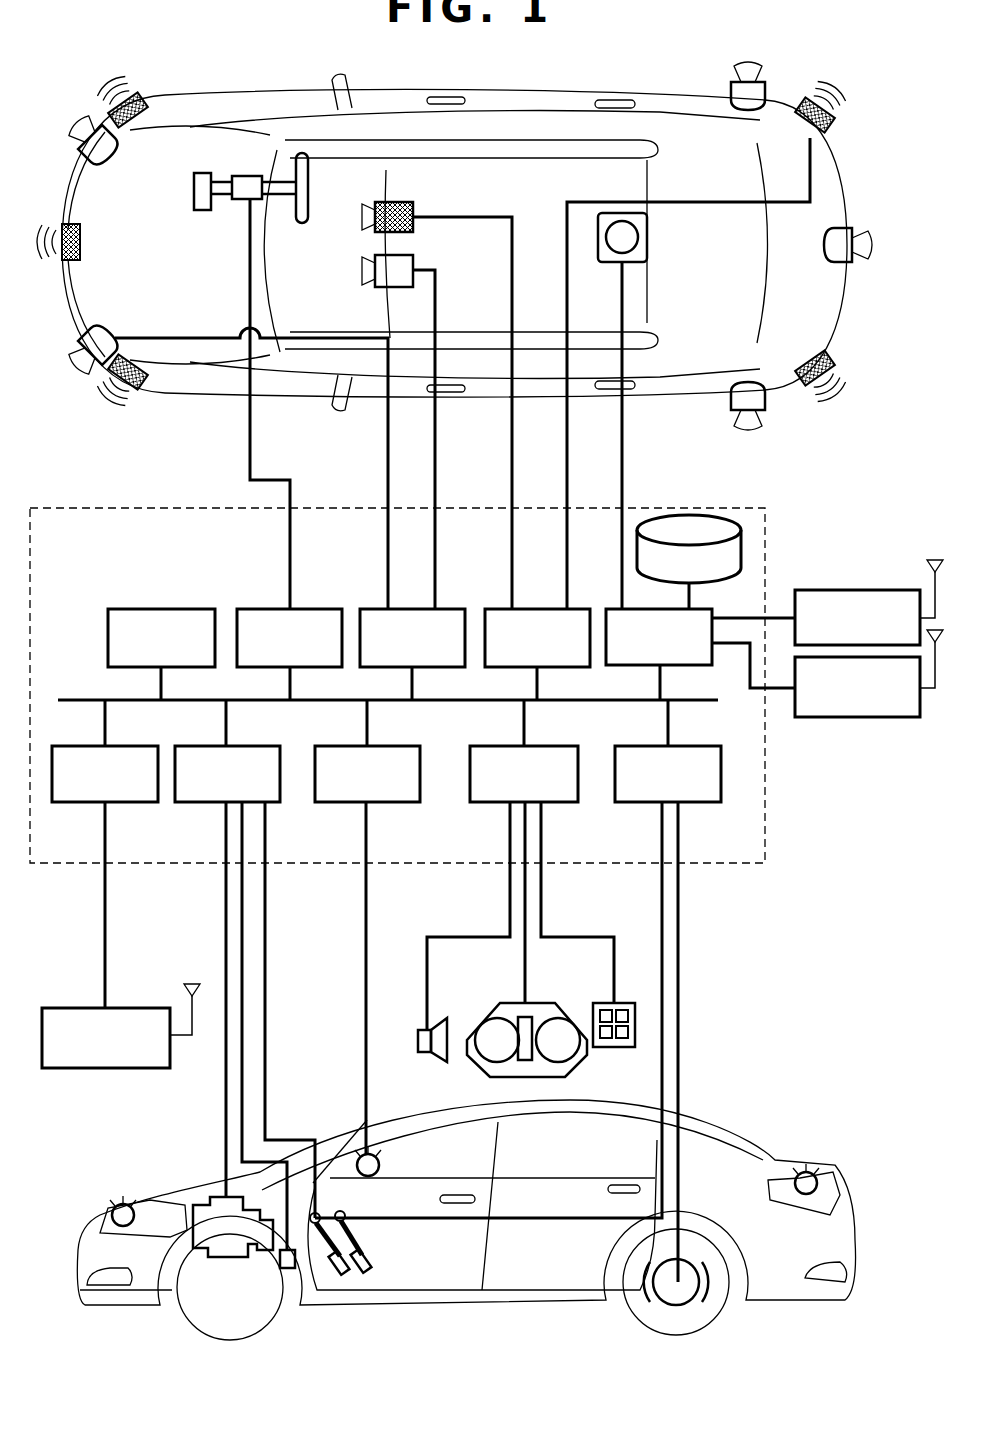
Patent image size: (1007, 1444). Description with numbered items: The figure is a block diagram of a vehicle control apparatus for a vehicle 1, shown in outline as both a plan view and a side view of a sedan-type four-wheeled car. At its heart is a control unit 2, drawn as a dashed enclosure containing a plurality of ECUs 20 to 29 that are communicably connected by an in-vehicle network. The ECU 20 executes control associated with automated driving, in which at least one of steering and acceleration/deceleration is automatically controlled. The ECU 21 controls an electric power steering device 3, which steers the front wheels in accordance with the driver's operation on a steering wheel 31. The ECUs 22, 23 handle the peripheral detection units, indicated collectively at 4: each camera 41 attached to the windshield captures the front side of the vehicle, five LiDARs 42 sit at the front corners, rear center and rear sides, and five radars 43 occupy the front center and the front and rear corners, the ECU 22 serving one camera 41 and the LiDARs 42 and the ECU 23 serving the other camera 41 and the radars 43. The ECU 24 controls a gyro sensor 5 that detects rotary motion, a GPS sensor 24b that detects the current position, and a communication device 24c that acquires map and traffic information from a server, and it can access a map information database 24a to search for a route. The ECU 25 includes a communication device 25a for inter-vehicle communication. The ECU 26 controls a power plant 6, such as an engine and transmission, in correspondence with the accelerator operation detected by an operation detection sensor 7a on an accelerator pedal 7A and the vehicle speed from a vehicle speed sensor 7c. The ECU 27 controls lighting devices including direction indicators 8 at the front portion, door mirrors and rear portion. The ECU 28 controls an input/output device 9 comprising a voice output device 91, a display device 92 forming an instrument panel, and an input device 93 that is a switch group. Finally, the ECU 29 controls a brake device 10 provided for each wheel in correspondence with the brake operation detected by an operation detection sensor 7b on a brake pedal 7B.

The vehicle 1 is at (862, 150).
The control unit 2 is at (764, 866).
The electric power steering device 3 is at (202, 212).
The steering wheel 31 is at (300, 225).
The external sensor group 4 is at (87, 98).
The camera 41 is at (416, 226).
The LiDAR 42 is at (112, 168).
The millimeter wave radar 43 is at (128, 128).
The gyro sensor 5 is at (650, 238).
The power plant 6 is at (194, 1197).
The operation detection sensor 7a is at (320, 1206).
The operation detection sensor 7b is at (348, 1216).
The accelerator pedal 7A is at (350, 1265).
The brake pedal 7B is at (372, 1258).
The vehicle speed sensor 7c is at (290, 1270).
The direction indicator 8 is at (113, 1208).
The input/output device 9 is at (452, 1078).
The voice output device 91 is at (418, 1036).
The display device 92 is at (481, 1020).
The input device 93 is at (610, 1048).
The brake device 10 is at (680, 1328).
The ECU 20 is at (194, 609).
The ECU 21 is at (322, 609).
The ECU 22 is at (410, 609).
The ECU 23 is at (542, 609).
The ECU 24 is at (608, 609).
The map information database 24a is at (690, 515).
The GPS sensor 24b is at (856, 590).
The communication device 24c is at (846, 717).
The ECU 25 is at (132, 802).
The communication device 25a is at (104, 1068).
The ECU 26 is at (206, 802).
The ECU 27 is at (394, 802).
The ECU 28 is at (558, 802).
The ECU 29 is at (706, 802).